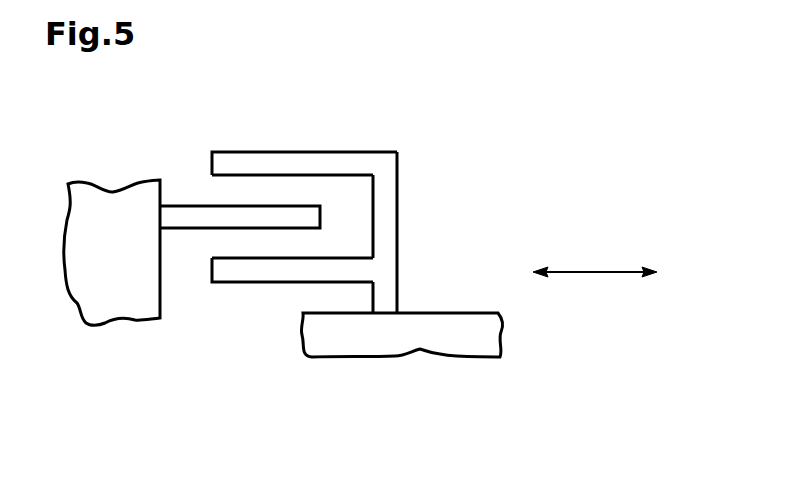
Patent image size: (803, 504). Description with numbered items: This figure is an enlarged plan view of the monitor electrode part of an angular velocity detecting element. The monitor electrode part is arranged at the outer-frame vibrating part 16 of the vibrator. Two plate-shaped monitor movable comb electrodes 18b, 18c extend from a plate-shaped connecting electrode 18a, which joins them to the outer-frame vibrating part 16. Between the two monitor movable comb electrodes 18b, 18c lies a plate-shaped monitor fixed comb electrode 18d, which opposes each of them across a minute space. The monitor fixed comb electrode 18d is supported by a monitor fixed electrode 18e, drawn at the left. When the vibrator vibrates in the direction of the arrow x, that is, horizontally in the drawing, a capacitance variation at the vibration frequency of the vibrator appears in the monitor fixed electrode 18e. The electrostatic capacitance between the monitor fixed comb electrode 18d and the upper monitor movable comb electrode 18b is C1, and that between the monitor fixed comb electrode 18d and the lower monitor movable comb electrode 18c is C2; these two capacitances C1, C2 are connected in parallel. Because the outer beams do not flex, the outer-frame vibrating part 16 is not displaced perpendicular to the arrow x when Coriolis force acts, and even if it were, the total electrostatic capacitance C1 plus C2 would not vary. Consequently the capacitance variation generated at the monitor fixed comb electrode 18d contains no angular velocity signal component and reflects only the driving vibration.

The outer-frame vibrating part 16 is at (427, 348).
The connecting electrode 18a is at (398, 237).
The monitor movable comb electrode 18b is at (326, 160).
The monitor movable comb electrode 18c is at (273, 279).
The monitor fixed comb electrode 18d is at (185, 203).
The monitor fixed electrode 18e is at (123, 312).
The electrostatic capacitance C1 is at (238, 195).
The electrostatic capacitance C2 is at (238, 245).
The arrow x is at (582, 272).